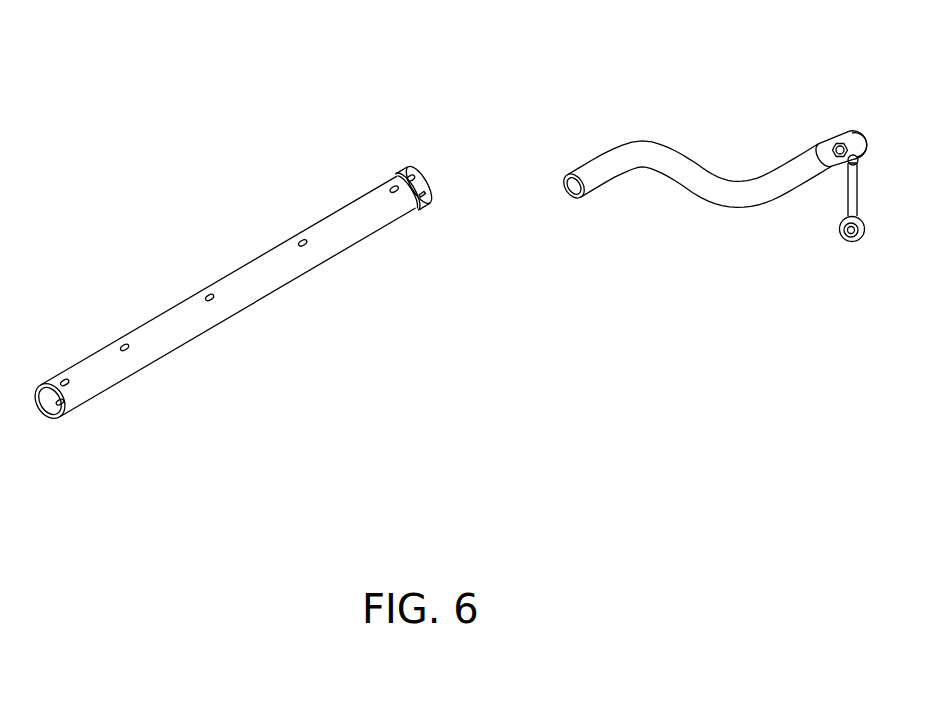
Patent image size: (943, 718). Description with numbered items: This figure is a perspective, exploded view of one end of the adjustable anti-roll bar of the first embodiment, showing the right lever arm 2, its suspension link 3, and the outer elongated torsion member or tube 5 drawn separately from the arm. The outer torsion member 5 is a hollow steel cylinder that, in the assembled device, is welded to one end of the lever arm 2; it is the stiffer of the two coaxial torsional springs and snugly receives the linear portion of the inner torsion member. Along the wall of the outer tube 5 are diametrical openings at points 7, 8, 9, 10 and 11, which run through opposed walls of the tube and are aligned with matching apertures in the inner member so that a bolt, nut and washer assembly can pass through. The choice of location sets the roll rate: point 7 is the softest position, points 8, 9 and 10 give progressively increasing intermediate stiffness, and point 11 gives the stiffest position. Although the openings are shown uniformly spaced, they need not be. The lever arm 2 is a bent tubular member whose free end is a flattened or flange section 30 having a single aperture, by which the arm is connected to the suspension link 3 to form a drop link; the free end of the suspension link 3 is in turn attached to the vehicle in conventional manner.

The lever arm 2 is at (682, 180).
The suspension link 3 is at (843, 226).
The outer elongated torsion member 5 is at (253, 285).
The point 7 is at (398, 175).
The point 8 is at (304, 238).
The point 9 is at (211, 293).
The point 10 is at (126, 343).
The point 11 is at (65, 378).
The flattened or flange section 30 is at (822, 146).